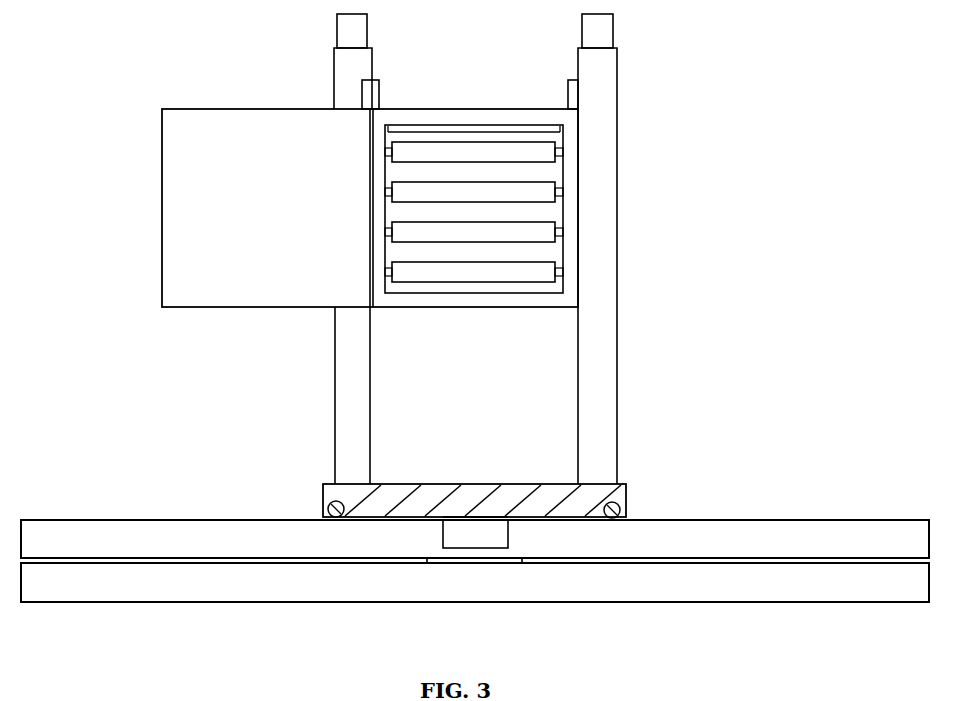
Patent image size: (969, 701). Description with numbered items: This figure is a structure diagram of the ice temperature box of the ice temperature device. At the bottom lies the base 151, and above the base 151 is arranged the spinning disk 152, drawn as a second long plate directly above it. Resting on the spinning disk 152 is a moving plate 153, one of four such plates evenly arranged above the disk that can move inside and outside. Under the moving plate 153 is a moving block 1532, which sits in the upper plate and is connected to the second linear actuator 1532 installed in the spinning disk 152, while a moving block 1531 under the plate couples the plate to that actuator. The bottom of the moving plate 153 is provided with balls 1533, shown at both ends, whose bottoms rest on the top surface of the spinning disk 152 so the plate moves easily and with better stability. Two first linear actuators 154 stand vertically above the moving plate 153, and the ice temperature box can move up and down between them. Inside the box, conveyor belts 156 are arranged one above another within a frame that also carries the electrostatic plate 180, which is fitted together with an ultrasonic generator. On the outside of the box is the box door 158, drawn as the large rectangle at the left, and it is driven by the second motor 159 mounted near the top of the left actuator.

The base 151 is at (758, 578).
The spinning disk 152 is at (703, 532).
The moving plate 153 is at (465, 487).
The moving block 1531 is at (483, 517).
The second linear actuator 1532 is at (497, 540).
The balls 1533 is at (327, 507).
The first linear actuator 154 is at (592, 332).
The conveyor belt 156 is at (540, 190).
The box door 158 is at (255, 118).
The second motor 159 is at (375, 97).
The electrostatic plate 180 is at (503, 128).